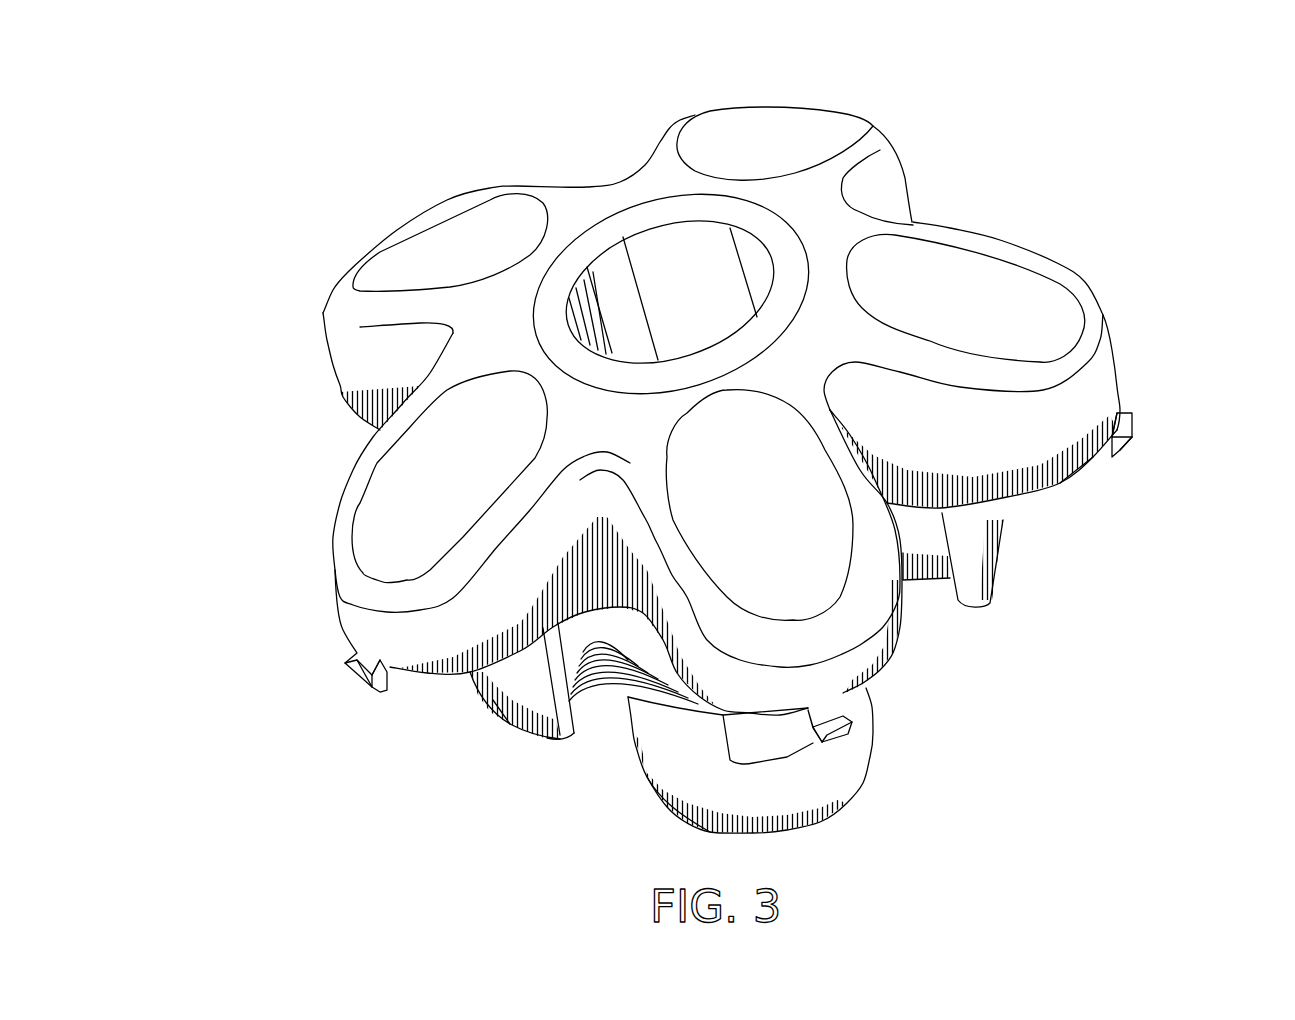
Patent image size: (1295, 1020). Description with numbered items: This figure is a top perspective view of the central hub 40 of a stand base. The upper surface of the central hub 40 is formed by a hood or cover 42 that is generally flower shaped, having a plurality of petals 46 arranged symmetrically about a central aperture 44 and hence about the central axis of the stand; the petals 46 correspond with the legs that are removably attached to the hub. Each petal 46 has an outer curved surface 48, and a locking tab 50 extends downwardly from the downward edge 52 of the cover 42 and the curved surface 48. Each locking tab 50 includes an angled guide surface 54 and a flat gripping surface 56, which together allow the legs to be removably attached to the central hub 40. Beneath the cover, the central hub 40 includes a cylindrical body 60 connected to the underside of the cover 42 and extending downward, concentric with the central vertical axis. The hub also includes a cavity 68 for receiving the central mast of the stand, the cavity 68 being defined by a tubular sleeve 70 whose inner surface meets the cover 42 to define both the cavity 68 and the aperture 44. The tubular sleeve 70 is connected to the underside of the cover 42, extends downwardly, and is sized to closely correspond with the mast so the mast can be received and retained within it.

The central hub 40 is at (245, 832).
The cover 42 is at (467, 415).
The central aperture 44 is at (641, 220).
The petals 46 is at (747, 157).
The outer curved surface 48 is at (333, 365).
The locking tab 50 is at (385, 707).
The downward edge 52 is at (427, 687).
The angled guide surface 54 is at (367, 690).
The flat gripping surface 56 is at (350, 667).
The cylindrical body 60 is at (627, 653).
The cavity 68 is at (622, 285).
The tubular sleeve 70 is at (690, 770).